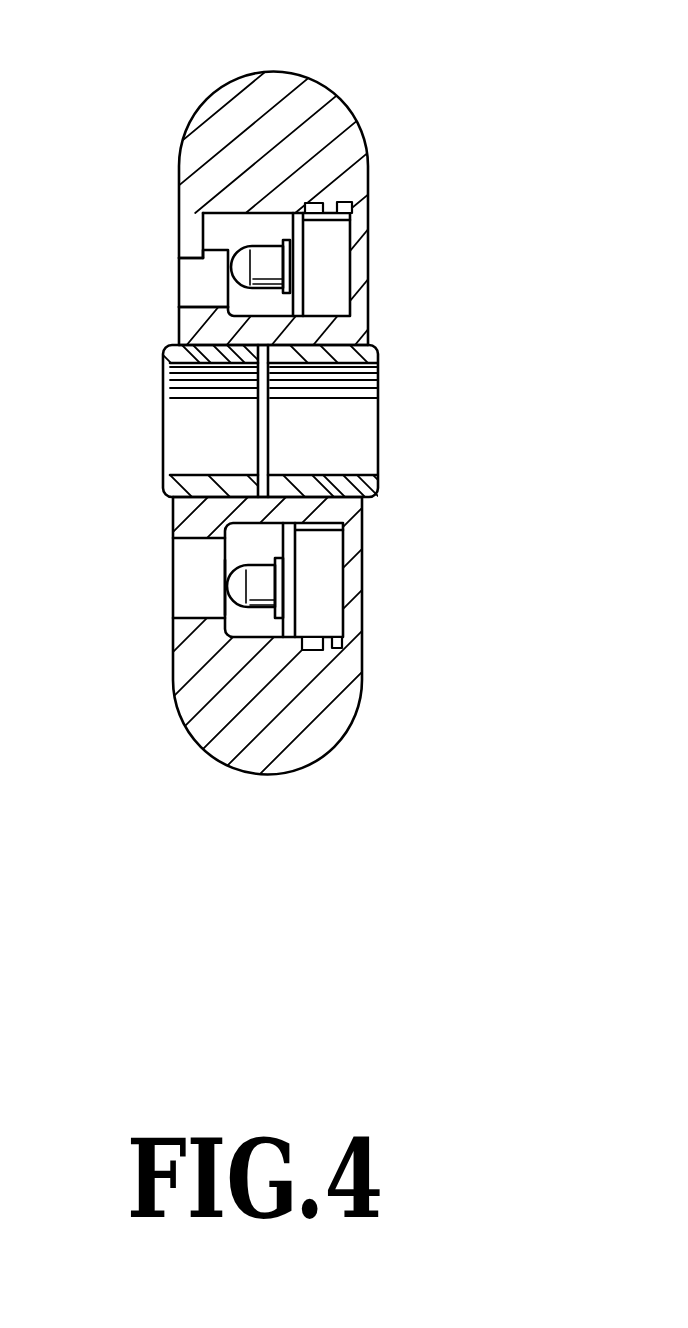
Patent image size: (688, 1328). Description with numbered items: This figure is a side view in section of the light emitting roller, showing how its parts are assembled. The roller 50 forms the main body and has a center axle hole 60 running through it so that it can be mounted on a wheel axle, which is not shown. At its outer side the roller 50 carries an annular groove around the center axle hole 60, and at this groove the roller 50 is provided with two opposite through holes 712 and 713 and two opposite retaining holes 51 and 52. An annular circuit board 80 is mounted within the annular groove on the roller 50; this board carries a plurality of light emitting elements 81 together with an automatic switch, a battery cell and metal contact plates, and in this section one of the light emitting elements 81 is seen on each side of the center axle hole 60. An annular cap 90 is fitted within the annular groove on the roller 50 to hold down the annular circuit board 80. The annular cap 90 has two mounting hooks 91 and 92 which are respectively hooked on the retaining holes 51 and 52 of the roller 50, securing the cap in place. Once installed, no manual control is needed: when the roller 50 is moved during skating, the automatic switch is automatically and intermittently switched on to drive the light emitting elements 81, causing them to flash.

The roller 50 is at (230, 748).
The retaining hole 51 is at (310, 648).
The retaining hole 52 is at (312, 205).
The center axle hole 60 is at (303, 475).
The annular circuit board 80 is at (243, 643).
The light emitting element 81 is at (230, 272).
The annular cap 90 is at (363, 245).
The mounting hook 91 is at (325, 650).
The mounting hook 92 is at (320, 205).
The through hole 712 is at (185, 567).
The through hole 713 is at (193, 298).